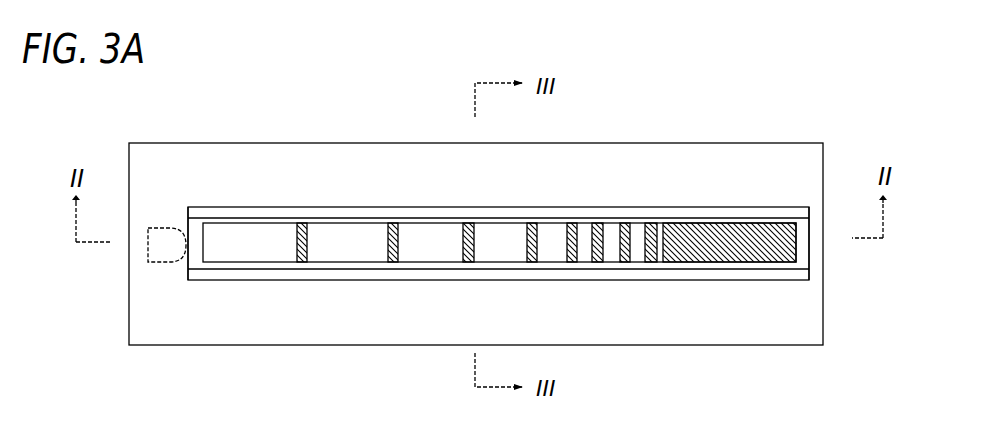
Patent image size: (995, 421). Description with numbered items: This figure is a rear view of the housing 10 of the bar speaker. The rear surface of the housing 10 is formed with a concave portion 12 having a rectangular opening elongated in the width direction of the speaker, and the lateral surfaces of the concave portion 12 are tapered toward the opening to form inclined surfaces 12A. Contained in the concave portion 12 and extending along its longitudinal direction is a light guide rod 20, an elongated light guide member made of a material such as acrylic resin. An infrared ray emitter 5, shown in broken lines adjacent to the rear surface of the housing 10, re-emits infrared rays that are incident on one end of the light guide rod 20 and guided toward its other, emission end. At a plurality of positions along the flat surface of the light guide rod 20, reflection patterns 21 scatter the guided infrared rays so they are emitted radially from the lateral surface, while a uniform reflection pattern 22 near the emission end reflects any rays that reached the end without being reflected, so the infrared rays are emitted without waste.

The housing 10 is at (129, 143).
The infrared ray emitter 5 is at (147, 228).
The concave portion 12 is at (806, 227).
The inclined surfaces 12A is at (803, 207).
The light guide rod 20 is at (243, 222).
The reflection patterns 21 is at (300, 225).
The reflection pattern 22 is at (715, 221).